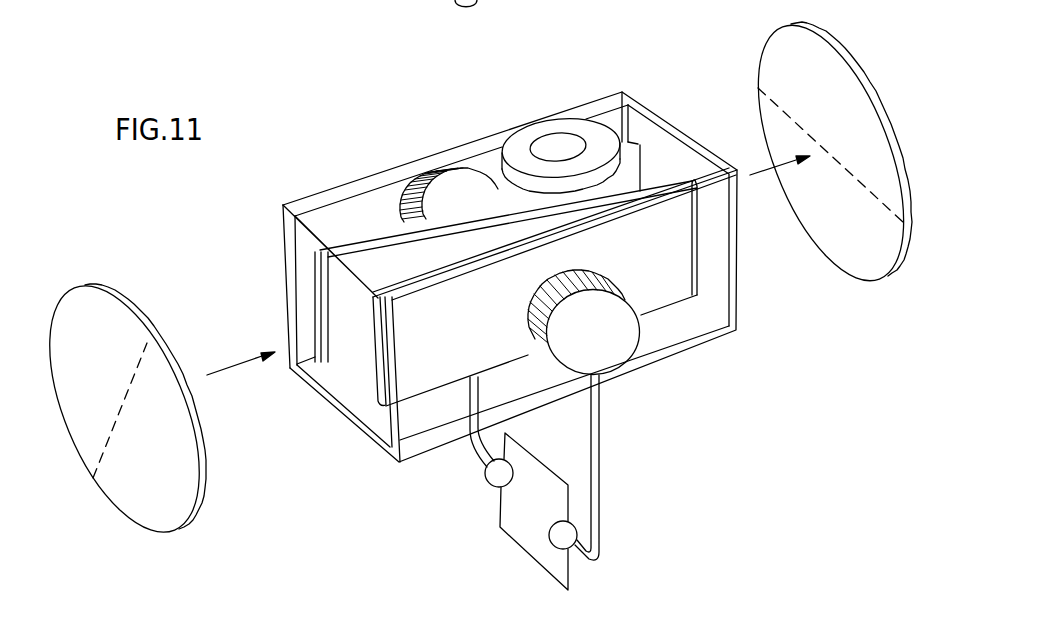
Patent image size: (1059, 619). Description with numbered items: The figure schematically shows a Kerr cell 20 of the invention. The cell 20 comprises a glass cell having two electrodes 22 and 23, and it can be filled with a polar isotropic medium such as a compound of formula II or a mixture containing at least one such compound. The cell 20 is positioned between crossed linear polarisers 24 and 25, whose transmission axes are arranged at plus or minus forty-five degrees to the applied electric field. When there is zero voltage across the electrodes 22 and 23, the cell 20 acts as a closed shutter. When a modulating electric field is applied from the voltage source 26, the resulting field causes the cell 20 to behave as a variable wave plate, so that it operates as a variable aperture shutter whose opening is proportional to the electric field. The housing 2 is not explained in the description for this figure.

The housing frame 2 is at (420, 448).
The frame side member 20 is at (298, 284).
The lens 22 is at (402, 222).
The mounting plate with disc 23 is at (663, 292).
The front lens 24 is at (107, 308).
The rear lens 25 is at (772, 43).
The circuit board 26 is at (536, 517).